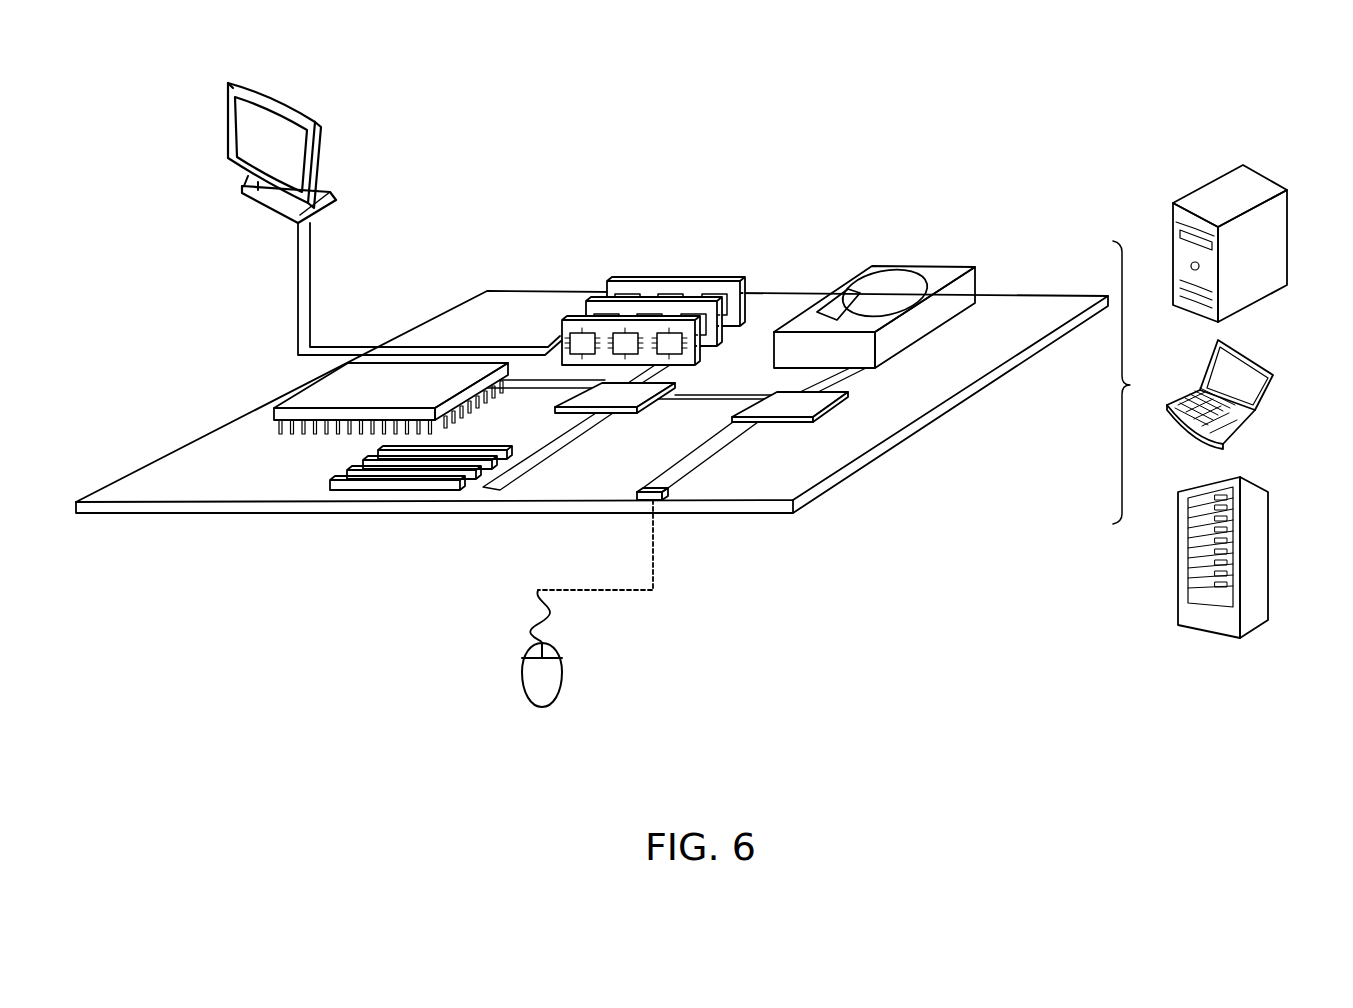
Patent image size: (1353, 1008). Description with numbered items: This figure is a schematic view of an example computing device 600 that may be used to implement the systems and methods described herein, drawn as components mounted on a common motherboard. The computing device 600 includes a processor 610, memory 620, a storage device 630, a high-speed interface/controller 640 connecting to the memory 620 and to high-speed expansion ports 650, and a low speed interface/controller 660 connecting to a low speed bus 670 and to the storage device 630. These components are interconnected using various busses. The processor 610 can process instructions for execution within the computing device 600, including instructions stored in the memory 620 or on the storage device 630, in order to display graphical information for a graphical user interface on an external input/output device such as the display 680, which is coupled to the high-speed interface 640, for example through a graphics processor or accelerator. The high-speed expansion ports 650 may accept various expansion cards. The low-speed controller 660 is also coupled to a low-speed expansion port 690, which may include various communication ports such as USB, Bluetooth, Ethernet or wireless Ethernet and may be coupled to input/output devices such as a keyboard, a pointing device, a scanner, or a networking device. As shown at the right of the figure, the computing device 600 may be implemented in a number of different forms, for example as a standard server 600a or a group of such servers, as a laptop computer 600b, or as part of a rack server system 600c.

The computing device 600 is at (748, 150).
The standard server 600a is at (1203, 182).
The laptop computer 600b is at (1255, 362).
The rack server system 600c is at (1262, 537).
The processor 610 is at (273, 408).
The memory 620 is at (670, 280).
The storage device 630 is at (920, 265).
The high-speed interface/controller 640 is at (615, 417).
The high-speed expansion ports 650 is at (330, 480).
The low speed interface/controller 660 is at (780, 388).
The low speed bus 670 is at (733, 455).
The display 680 is at (228, 132).
The low-speed expansion port 690 is at (665, 503).